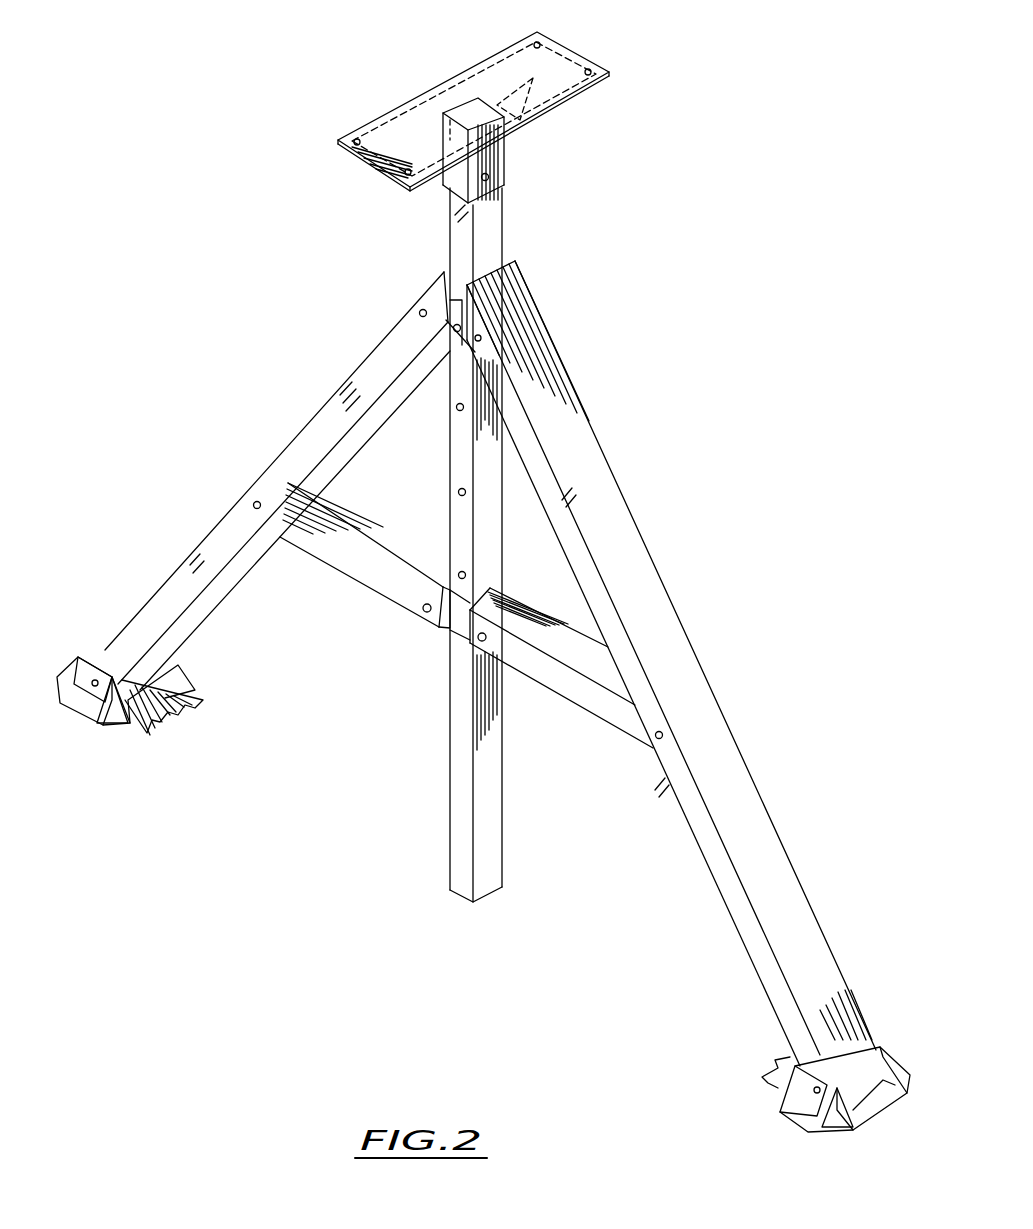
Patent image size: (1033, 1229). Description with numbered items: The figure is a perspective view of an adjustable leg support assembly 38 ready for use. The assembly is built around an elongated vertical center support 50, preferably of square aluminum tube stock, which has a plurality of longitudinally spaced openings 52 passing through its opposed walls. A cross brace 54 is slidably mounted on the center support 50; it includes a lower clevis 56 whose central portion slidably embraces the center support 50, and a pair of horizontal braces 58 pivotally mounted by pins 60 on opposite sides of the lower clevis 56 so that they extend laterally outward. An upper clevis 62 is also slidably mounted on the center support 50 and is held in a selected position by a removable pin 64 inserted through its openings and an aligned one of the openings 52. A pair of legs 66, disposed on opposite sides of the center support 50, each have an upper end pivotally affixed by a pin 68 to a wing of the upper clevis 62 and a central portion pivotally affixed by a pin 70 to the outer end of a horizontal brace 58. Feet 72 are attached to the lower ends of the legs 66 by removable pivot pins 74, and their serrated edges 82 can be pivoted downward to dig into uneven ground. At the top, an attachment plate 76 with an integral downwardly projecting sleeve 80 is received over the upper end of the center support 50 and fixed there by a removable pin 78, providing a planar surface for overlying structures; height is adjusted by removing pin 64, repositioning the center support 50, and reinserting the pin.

The leg assembly 38 is at (705, 382).
The center support 50 is at (460, 725).
The openings 52 is at (458, 575).
The cross brace 54 is at (340, 577).
The lower clevis 56 is at (463, 628).
The horizontal braces 58 is at (592, 698).
The pins 60 is at (424, 611).
The upper clevis 62 is at (462, 320).
The removable pin 64 is at (463, 328).
The legs 66 is at (360, 395).
The pin 68 is at (473, 352).
The pin 70 is at (254, 502).
The feet 72 is at (95, 728).
The removable pivot pins 74 is at (95, 680).
The attachment plate 76 is at (563, 60).
The removable pin 78 is at (489, 177).
The sleeve 80 is at (500, 155).
The serrated edges 82 is at (183, 720).